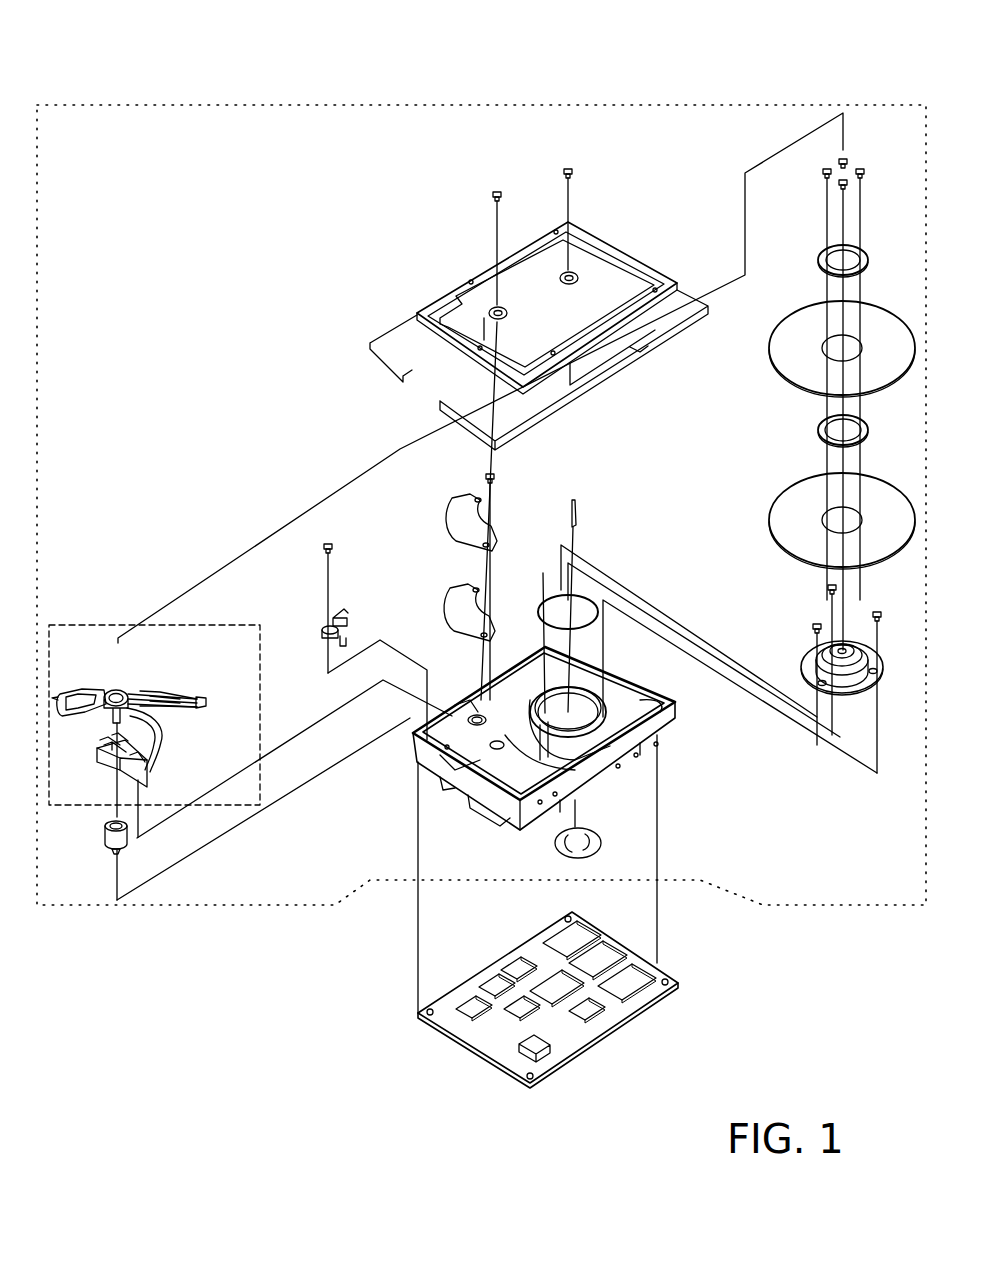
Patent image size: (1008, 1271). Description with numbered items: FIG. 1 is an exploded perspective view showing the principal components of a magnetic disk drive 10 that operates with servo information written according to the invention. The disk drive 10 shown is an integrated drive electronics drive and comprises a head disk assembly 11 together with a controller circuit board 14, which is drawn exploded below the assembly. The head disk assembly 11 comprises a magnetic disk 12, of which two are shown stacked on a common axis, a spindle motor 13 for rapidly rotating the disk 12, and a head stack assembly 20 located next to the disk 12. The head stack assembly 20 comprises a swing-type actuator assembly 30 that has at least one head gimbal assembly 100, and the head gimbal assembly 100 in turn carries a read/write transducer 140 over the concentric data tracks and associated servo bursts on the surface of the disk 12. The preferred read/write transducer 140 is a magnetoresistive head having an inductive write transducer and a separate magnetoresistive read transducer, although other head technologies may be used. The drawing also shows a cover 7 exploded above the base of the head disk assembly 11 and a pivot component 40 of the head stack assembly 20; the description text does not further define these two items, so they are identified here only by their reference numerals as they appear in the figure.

The magnetic disk drive 10 is at (292, 70).
The head disk assembly 11 is at (763, 908).
The magnetic disk 12 is at (777, 497).
The spindle motor 13 is at (807, 658).
The controller circuit board 14 is at (600, 1040).
The cover 7 is at (443, 290).
The head stack assembly 20 is at (87, 622).
The swing-type actuator assembly 30 is at (167, 688).
The pivot bearing 40 is at (130, 688).
The head gimbal assembly 100 is at (177, 693).
The read/write transducer 140 is at (202, 700).